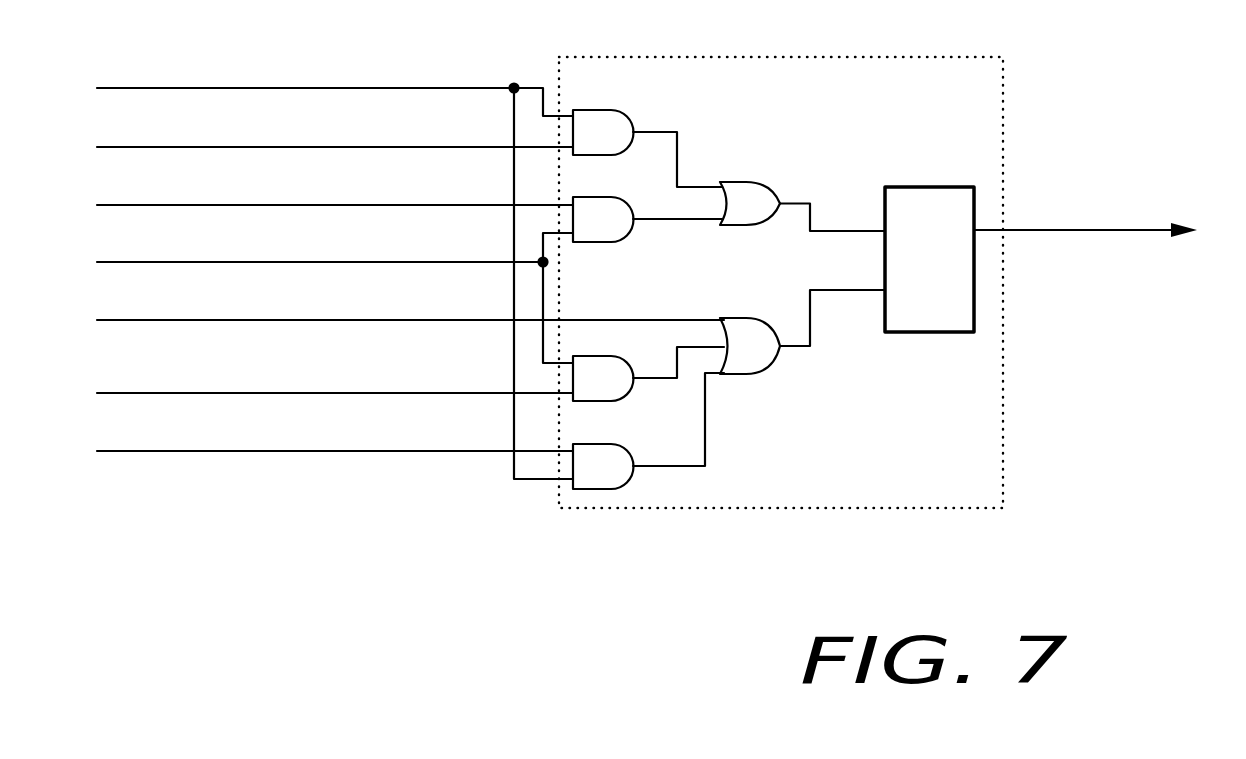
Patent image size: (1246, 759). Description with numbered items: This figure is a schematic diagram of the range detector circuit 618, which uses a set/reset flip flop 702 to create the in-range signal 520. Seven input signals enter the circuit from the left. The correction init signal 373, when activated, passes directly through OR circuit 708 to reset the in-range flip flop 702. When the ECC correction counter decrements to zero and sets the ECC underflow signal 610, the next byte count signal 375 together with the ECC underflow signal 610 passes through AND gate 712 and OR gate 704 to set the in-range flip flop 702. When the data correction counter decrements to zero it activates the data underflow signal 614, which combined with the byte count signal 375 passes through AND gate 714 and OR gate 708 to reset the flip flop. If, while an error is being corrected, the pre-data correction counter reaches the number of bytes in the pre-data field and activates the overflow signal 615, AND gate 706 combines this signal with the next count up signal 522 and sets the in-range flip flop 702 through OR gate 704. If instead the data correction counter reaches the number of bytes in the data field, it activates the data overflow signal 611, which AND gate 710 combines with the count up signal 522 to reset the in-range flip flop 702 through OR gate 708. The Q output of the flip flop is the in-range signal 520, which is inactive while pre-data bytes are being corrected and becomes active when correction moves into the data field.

The byte count signal 375 is at (402, 84).
The ECC underflow signal 610 is at (402, 143).
The overflow signal 615 is at (402, 201).
The count up signal 522 is at (402, 258).
The correction init signal 373 is at (402, 317).
The data overflow signal 611 is at (402, 390).
The data underflow signal 614 is at (402, 447).
The range detector circuit 618 is at (812, 57).
The AND gate 712 is at (582, 108).
The AND gate 706 is at (582, 196).
The AND gate 710 is at (582, 355).
The AND gate 714 is at (582, 443).
The OR gate 704 is at (732, 170).
The OR circuit 708 is at (730, 322).
The set/reset flip flop 702 is at (915, 187).
The in-range signal 520 is at (1030, 231).